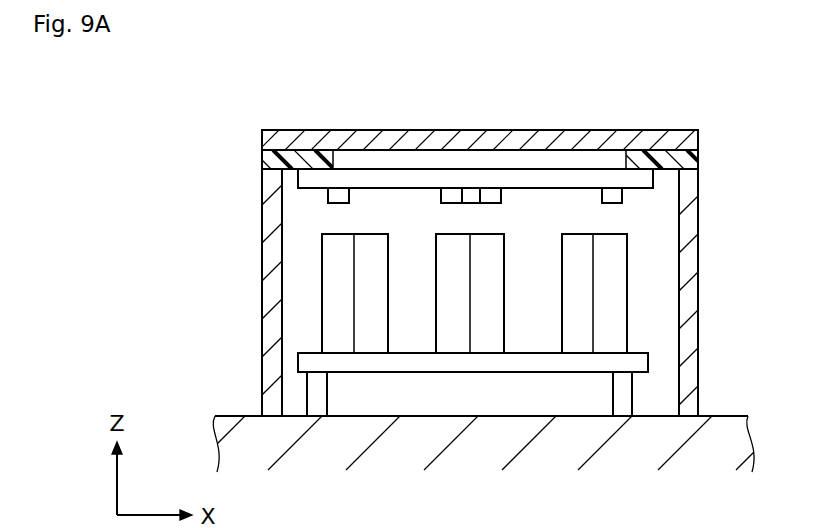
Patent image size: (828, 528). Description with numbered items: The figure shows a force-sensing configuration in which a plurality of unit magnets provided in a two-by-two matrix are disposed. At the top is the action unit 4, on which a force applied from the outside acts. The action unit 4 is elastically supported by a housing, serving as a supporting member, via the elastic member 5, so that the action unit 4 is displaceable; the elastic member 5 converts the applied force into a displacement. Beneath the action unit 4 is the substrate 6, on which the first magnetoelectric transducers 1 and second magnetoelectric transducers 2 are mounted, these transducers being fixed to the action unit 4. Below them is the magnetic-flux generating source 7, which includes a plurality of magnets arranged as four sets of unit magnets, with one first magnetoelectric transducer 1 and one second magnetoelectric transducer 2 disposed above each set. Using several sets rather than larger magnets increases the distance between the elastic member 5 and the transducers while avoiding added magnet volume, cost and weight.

The first magnetoelectric transducer 1 is at (452, 195).
The second magnetoelectric transducer 2 is at (338, 195).
The action unit 4 is at (263, 137).
The elastic member 5 is at (268, 160).
The substrate 6 is at (648, 179).
The magnetic-flux generating source 7 is at (330, 265).